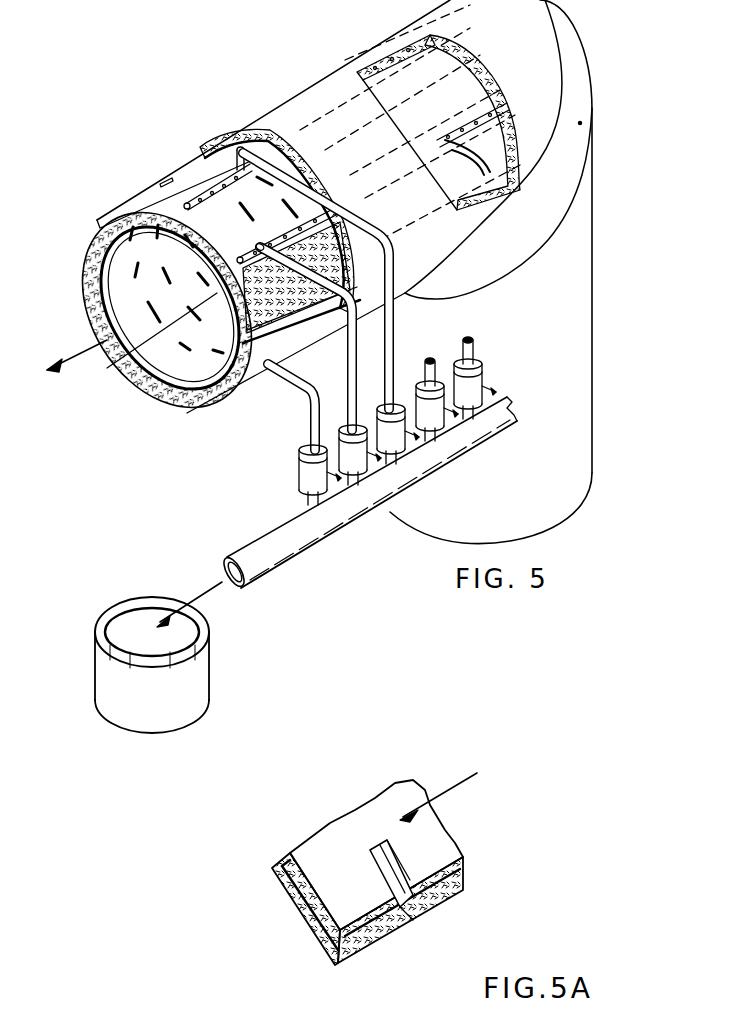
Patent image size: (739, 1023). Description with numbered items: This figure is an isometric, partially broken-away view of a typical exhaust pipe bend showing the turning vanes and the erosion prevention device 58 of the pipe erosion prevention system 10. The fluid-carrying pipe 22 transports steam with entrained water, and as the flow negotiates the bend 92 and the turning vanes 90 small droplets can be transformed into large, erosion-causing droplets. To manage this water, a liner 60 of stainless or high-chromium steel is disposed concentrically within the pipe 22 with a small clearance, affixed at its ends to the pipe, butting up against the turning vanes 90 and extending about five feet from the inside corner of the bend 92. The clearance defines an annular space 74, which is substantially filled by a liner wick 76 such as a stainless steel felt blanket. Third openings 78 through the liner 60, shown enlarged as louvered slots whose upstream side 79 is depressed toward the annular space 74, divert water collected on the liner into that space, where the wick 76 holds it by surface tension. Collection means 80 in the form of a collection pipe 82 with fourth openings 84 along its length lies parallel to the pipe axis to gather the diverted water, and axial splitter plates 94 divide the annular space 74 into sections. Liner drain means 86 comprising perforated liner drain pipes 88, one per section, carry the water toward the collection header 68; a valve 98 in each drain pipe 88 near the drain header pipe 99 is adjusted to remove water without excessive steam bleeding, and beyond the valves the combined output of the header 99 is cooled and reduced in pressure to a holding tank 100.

In FIG. 5, the pipe erosion prevention system 10 is at (238, 47).
In FIG. 5, the fluid carrying pipe means 22 is at (578, 403).
In FIG. 5, the erosion prevention device 58 is at (190, 190).
In FIG. 5, the liner means 60 is at (117, 258).
In FIG. 5A, the liner means 60 is at (447, 840).
In FIG. 5, the collection header 68 is at (273, 562).
In FIG. 5, the annular space 74 is at (190, 407).
In FIG. 5A, the annular space 74 is at (463, 880).
In FIG. 5, the liner wick means 76 is at (163, 387).
In FIG. 5, the third opening means 78 is at (137, 277).
In FIG. 5A, the third opening means 78 is at (377, 847).
In FIG. 5A, the upstream side of third opening 79 is at (413, 920).
In FIG. 5, the collection means 80 is at (230, 177).
In FIG. 5, the collection pipe means 82 is at (160, 183).
In FIG. 5, the fourth opening means 84 is at (395, 293).
In FIG. 5, the liner drain means 86 is at (313, 423).
In FIG. 5, the liner drain pipe means 88 is at (353, 353).
In FIG. 5, the turning vanes 90 is at (580, 123).
In FIG. 5, the bend 92 is at (580, 70).
In FIG. 5, the axial splitter plate means 94 is at (210, 427).
In FIG. 5, the valve means 98 is at (327, 478).
In FIG. 5, the drain header pipe means 99 is at (377, 512).
In FIG. 5, the holding tank 100 is at (193, 693).